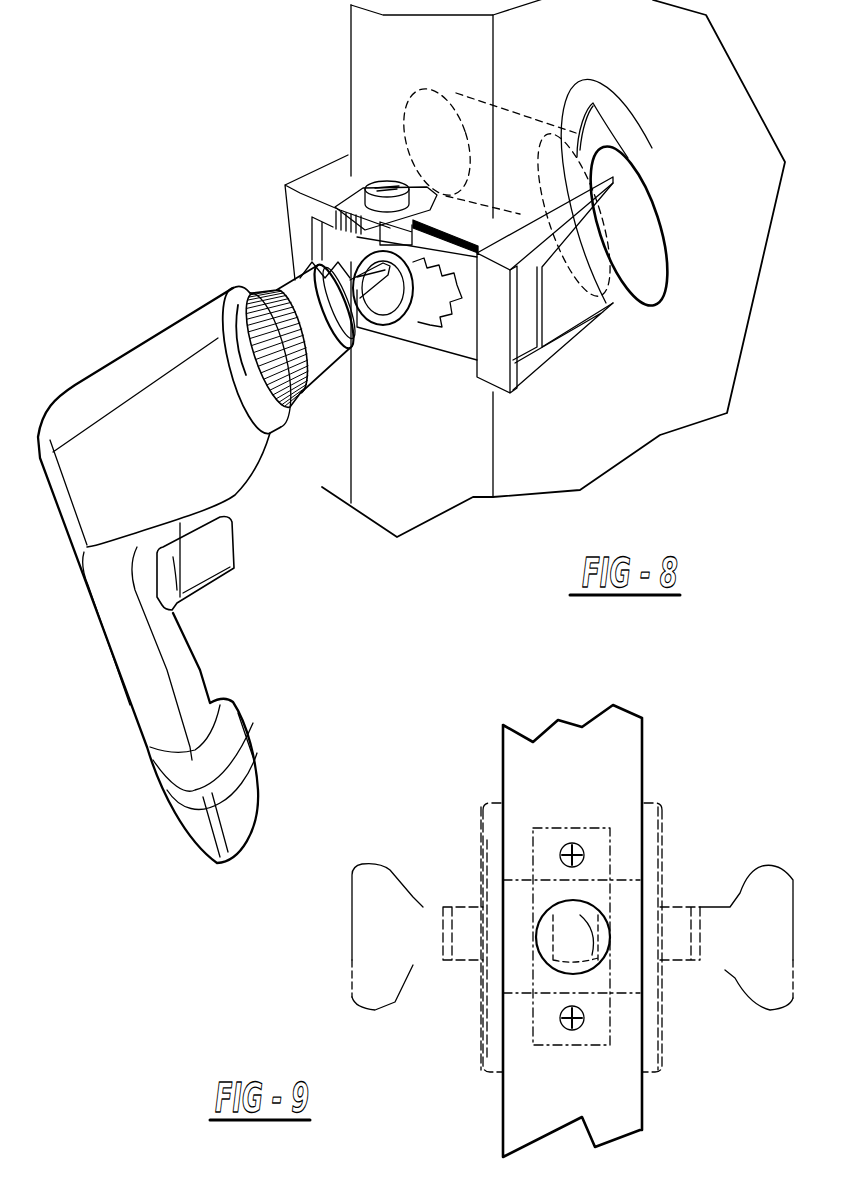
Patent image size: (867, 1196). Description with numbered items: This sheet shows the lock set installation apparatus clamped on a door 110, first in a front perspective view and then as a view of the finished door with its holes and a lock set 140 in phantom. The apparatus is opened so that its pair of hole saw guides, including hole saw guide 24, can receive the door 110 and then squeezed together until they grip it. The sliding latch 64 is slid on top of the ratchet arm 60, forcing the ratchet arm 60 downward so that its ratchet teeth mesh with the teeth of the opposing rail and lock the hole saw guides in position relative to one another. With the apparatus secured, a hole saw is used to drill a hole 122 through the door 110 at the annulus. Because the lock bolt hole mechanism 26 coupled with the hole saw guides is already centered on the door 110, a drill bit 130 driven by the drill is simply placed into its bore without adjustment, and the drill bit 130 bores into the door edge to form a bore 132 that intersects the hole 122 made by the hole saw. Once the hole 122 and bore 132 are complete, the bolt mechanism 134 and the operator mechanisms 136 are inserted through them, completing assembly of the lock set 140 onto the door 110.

In FIG. 8, the door 110 is at (417, 35).
In FIG. 8, the sliding latch 64 is at (380, 183).
In FIG. 8, the ratchet arm 60 is at (372, 228).
In FIG. 8, the hole 122 is at (531, 117).
In FIG. 8, the hole saw guide 24 is at (652, 265).
In FIG. 8, the lock bolt hole mechanism 26 is at (424, 305).
In FIG. 8, the drill bit 130 is at (392, 268).
In FIG. 9, the lock set 140 is at (442, 880).
In FIG. 9, the bore 132 is at (593, 910).
In FIG. 9, the bolt mechanism 134 is at (563, 947).
In FIG. 9, the operator mechanisms 136 is at (380, 958).